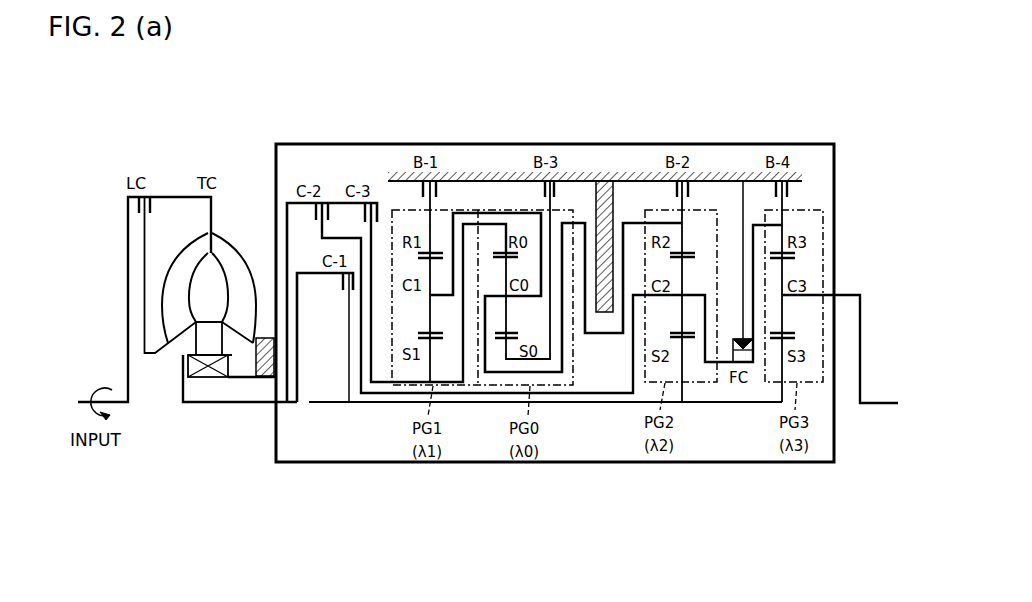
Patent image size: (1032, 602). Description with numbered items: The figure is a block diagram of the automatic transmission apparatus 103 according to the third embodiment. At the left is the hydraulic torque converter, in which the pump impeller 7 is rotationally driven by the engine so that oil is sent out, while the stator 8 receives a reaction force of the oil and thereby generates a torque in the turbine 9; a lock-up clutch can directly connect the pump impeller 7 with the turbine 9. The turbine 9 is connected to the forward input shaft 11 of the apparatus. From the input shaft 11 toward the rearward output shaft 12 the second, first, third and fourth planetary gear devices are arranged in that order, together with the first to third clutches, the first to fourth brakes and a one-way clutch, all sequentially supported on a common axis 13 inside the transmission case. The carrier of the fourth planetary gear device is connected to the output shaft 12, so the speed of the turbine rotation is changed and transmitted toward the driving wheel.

The automatic transmission apparatus 103 is at (580, 144).
The pump impeller 7 is at (233, 256).
The stator 8 is at (197, 335).
The turbine 9 is at (183, 256).
The input shaft 11 is at (238, 405).
The output shaft 12 is at (878, 406).
The common axis 13 is at (320, 404).